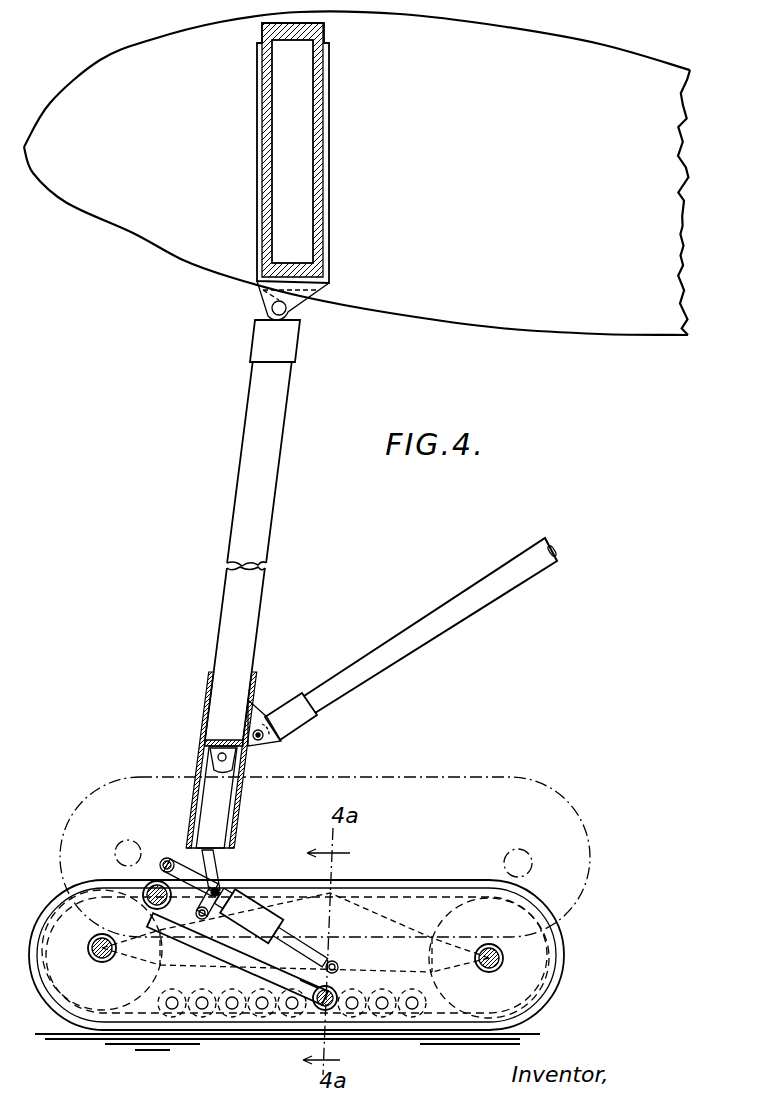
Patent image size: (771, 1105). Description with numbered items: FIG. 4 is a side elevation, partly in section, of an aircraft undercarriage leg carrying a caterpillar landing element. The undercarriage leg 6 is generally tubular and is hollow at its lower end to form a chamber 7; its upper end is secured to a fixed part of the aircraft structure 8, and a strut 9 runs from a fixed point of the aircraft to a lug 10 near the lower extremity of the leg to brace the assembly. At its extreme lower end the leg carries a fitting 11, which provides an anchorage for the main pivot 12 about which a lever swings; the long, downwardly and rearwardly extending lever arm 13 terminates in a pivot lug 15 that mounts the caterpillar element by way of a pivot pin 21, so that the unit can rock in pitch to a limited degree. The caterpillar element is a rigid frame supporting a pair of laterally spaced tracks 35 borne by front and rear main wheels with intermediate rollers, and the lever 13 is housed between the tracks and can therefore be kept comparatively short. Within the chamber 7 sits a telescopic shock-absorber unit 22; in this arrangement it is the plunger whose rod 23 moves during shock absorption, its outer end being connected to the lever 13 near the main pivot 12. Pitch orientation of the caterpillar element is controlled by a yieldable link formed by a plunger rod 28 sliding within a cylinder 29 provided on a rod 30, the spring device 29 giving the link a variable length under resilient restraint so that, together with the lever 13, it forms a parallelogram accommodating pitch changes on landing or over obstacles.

The undercarriage leg 6 is at (237, 592).
The chamber 7 is at (237, 752).
The fixed part of the aircraft structure 8 is at (300, 157).
The strut 9 is at (440, 630).
The lug 10 is at (252, 717).
The fitting 11 is at (173, 858).
The main pivot 12 is at (153, 880).
The lever arm 13 is at (252, 952).
The pivot lug 15 is at (333, 1008).
The pivot pin 21 is at (322, 990).
The telescopic shock-absorber unit 22 is at (208, 788).
The plunger rod 23 is at (215, 888).
The plunger rod 28 is at (217, 892).
The cylinder 29 is at (255, 910).
The rod 30 is at (318, 955).
The tracks 35 is at (425, 888).